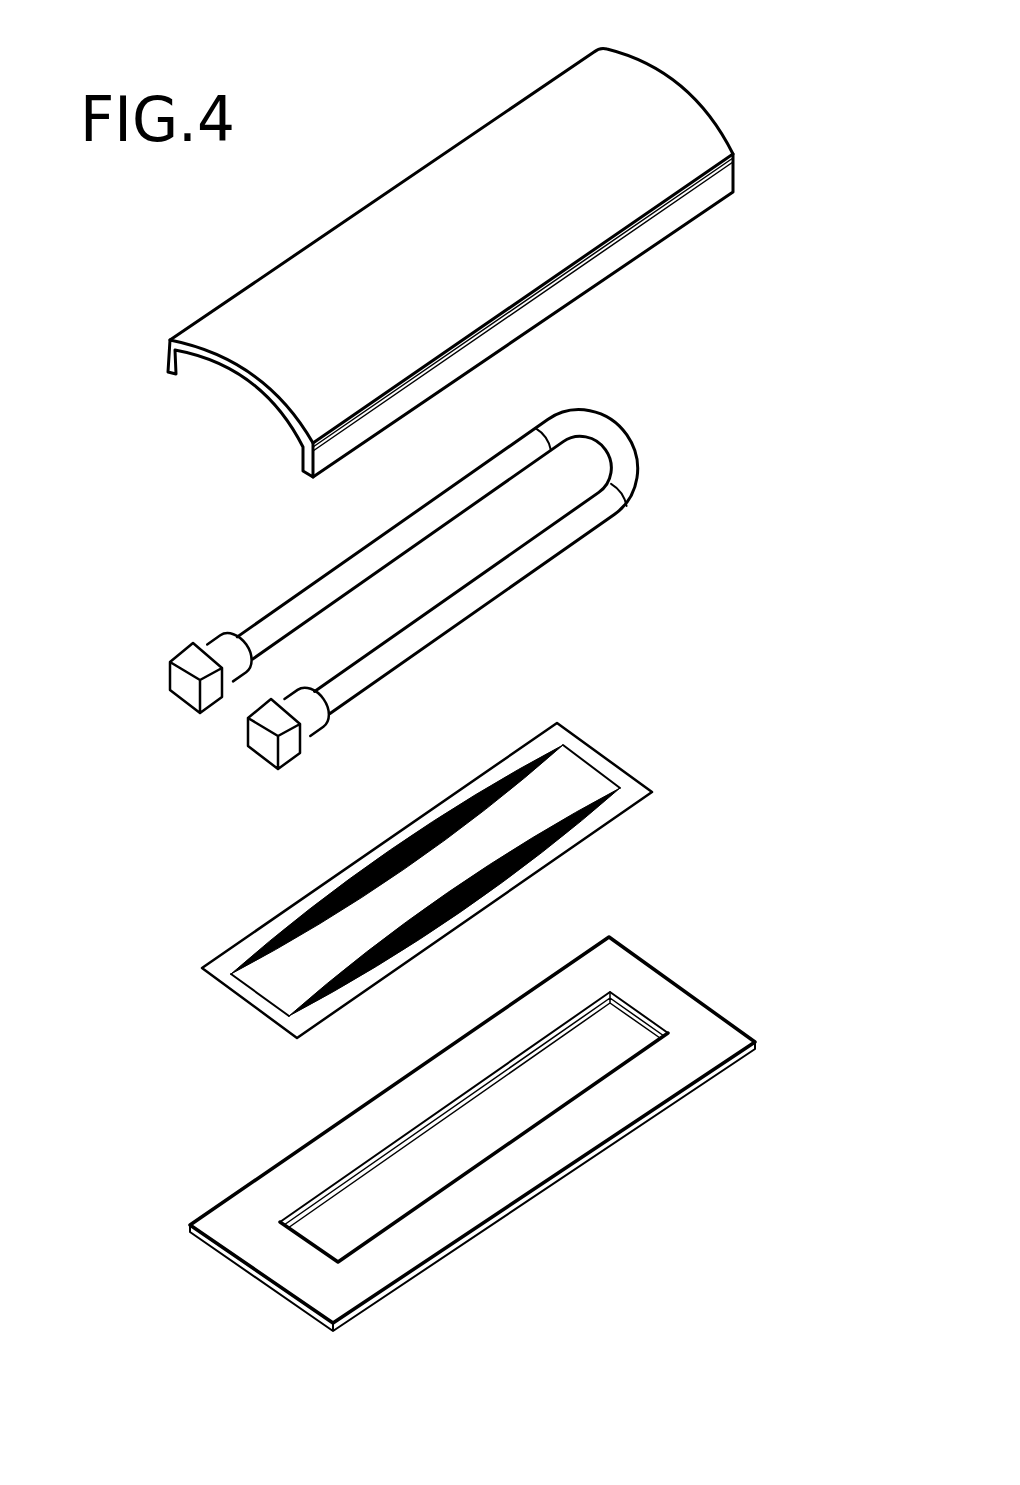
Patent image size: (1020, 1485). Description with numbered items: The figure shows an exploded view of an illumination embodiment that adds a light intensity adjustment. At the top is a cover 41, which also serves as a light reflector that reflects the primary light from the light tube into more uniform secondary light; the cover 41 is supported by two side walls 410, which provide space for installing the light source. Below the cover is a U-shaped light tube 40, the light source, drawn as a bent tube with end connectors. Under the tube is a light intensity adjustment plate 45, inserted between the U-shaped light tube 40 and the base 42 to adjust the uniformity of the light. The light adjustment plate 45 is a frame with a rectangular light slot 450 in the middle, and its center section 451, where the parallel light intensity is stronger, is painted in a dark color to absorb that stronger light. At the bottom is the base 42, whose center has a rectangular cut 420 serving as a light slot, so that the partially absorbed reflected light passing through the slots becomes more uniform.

The U-shaped light tube 40 is at (627, 448).
The cover 41 is at (500, 148).
The side walls 410 is at (723, 178).
The base 42 is at (670, 1000).
The cut 420 is at (588, 1063).
The light intensity adjustment plate 45 is at (600, 765).
The light slot 450 is at (543, 830).
The center section 451 is at (437, 818).